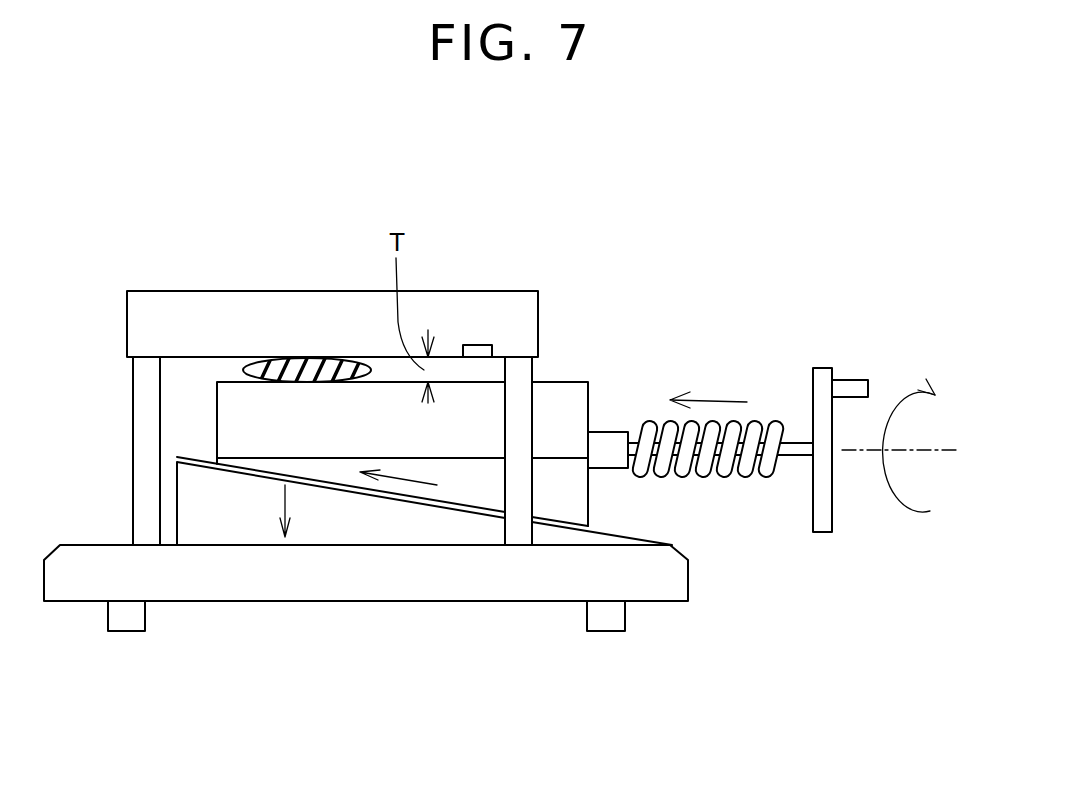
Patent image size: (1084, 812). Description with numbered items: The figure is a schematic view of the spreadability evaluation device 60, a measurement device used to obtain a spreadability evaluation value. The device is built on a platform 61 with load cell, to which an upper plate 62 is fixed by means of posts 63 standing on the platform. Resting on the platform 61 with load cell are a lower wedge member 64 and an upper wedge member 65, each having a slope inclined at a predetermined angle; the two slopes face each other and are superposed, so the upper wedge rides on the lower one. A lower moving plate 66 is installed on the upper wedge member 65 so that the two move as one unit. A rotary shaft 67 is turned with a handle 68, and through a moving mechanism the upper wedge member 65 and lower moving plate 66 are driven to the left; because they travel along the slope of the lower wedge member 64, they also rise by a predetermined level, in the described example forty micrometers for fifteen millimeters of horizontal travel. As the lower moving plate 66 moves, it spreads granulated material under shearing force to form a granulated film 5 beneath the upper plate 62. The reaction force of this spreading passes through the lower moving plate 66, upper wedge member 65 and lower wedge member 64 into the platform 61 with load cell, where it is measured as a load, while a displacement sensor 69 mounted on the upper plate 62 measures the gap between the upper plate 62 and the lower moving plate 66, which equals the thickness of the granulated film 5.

The spreadability evaluation device 60 is at (689, 226).
The platform with load cell 61 is at (212, 583).
The upper plate 62 is at (230, 307).
The posts 63 is at (143, 485).
The lower wedge member 64 is at (360, 520).
The upper wedge member 65 is at (587, 498).
The lower moving plate 66 is at (585, 398).
The rotary shaft 67 is at (797, 440).
The handle 68 is at (820, 380).
The displacement sensor 69 is at (477, 352).
The granulated film 5 is at (308, 370).